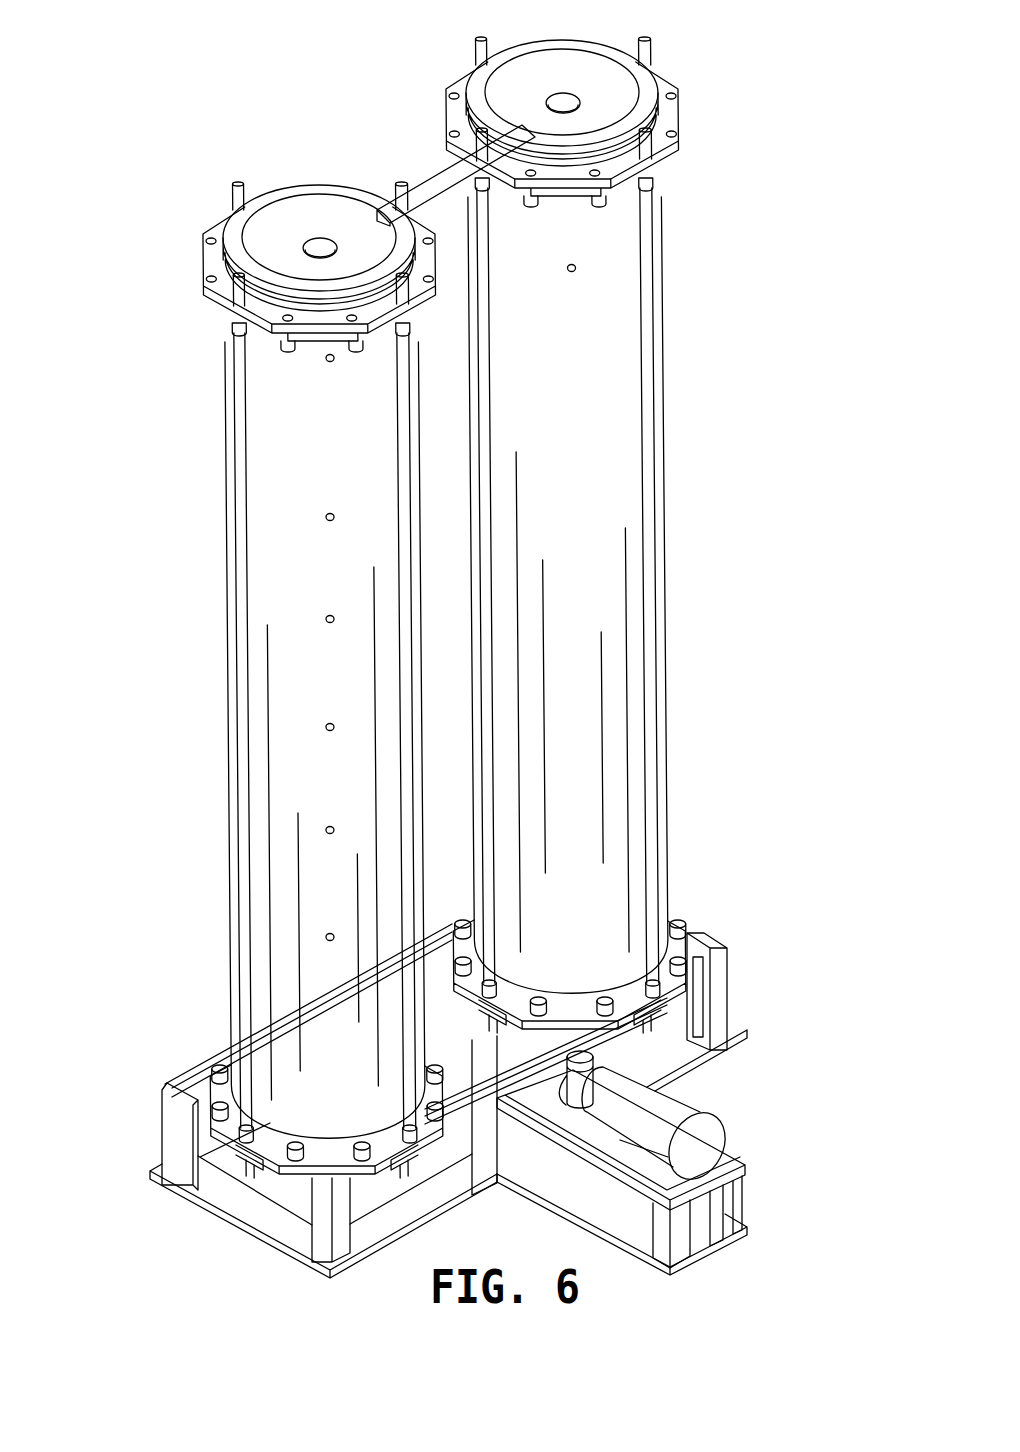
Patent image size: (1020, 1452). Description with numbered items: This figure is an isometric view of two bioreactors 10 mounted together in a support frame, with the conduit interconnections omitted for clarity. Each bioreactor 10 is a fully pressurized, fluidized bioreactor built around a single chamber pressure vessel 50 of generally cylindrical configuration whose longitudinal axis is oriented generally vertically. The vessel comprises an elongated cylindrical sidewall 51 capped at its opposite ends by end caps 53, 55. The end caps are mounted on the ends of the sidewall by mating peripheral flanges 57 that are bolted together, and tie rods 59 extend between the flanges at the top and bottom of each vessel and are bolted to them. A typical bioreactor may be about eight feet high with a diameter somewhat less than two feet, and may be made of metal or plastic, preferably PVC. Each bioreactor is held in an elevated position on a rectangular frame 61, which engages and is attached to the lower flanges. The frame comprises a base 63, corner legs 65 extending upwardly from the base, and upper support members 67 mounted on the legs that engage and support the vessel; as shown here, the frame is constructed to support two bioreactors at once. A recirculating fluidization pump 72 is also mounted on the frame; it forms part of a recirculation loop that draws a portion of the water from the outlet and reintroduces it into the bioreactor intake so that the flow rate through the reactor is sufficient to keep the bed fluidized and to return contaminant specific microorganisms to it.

The bioreactor 10 is at (454, 675).
The pressure vessel 50 is at (467, 660).
The cylindrical sidewall 51 is at (298, 540).
The end cap 53 is at (262, 230).
The end cap 55 is at (265, 1170).
The peripheral flanges 57 is at (670, 113).
The tie rods 59 is at (207, 451).
The rectangular frame 61 is at (454, 1072).
The base 63 is at (280, 1232).
The upright post 65 is at (178, 1160).
The upper support members 67 is at (200, 1085).
The recirculating fluidization pump 72 is at (690, 1115).